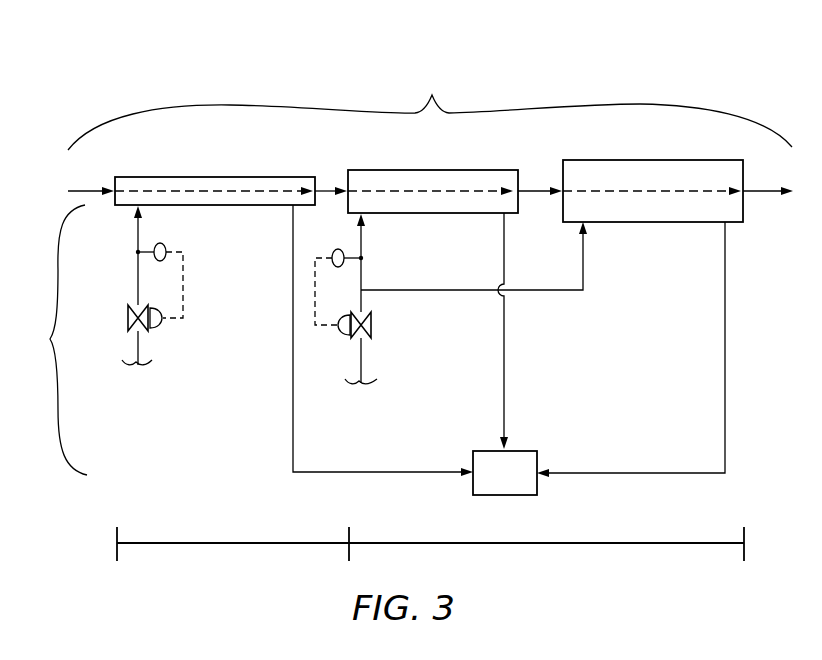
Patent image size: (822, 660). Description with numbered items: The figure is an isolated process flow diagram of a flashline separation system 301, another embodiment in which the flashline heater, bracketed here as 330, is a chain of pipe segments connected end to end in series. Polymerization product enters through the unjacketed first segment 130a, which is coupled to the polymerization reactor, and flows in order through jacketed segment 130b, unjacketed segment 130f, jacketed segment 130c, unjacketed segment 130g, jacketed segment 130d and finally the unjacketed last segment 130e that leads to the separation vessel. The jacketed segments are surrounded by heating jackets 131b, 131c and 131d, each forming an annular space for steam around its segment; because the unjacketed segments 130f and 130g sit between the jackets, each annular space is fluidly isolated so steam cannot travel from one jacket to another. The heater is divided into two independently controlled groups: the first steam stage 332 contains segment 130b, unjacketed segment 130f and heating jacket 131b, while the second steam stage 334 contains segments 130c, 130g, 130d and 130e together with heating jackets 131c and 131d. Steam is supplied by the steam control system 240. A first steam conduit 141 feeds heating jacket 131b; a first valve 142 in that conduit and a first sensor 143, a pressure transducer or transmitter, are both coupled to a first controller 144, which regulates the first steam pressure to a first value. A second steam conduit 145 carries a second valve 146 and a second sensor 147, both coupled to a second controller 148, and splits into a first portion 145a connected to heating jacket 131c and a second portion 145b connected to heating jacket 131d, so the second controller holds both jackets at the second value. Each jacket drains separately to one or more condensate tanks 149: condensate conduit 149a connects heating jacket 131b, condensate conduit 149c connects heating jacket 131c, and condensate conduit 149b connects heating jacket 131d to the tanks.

The flashline separation system 301 is at (196, 66).
The fuel manifold assembly 330 is at (430, 111).
The first segment 130a is at (88, 188).
The jacketed segment 130b is at (158, 188).
The first heating jacket 131b is at (225, 177).
The unjacketed segment 130f is at (332, 188).
The jacketed segment 130c is at (388, 188).
The heating jacket 131c is at (438, 170).
The unjacketed segment 130g is at (535, 194).
The jacketed segment 130d is at (600, 188).
The heating jacket 131d is at (660, 160).
The last segment 130e is at (765, 194).
The steam control system 240 is at (50, 340).
The first steam conduit 141 is at (136, 232).
The first valve 142 is at (128, 318).
The first sensor 143 is at (136, 252).
The first controller 144 is at (168, 242).
The second steam conduit 145 is at (368, 300).
The first portion 145a is at (365, 233).
The second portion 145b is at (584, 262).
The second valve 146 is at (372, 333).
The second sensor 147 is at (364, 260).
The second controller 148 is at (335, 248).
The condensate tanks 149 is at (522, 485).
The condensate conduit 149a is at (400, 473).
The condensate conduit 149b is at (620, 473).
The condensate conduit 149c is at (506, 372).
The first steam stage 332 is at (242, 545).
The second steam stage 334 is at (527, 545).